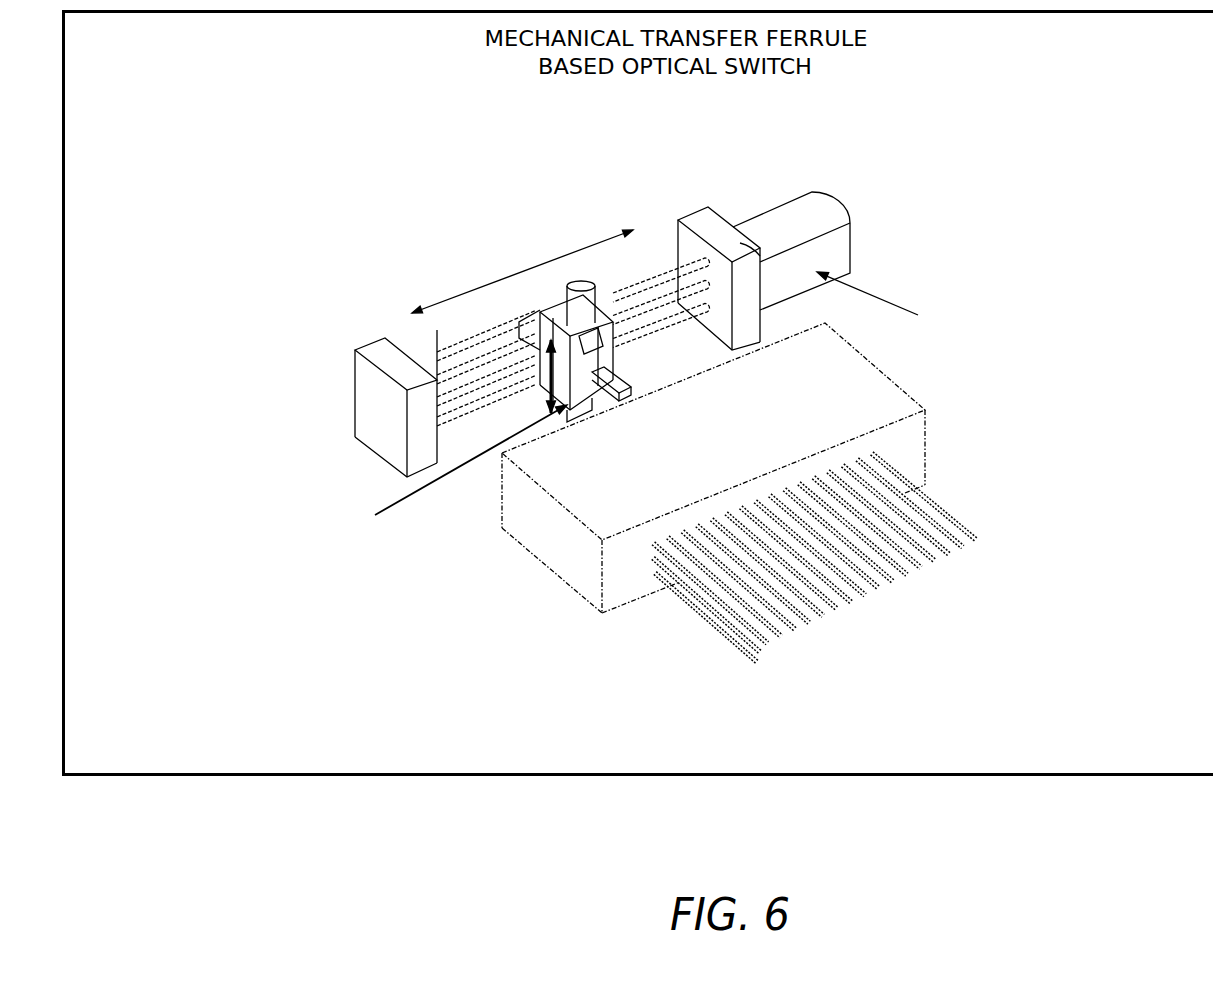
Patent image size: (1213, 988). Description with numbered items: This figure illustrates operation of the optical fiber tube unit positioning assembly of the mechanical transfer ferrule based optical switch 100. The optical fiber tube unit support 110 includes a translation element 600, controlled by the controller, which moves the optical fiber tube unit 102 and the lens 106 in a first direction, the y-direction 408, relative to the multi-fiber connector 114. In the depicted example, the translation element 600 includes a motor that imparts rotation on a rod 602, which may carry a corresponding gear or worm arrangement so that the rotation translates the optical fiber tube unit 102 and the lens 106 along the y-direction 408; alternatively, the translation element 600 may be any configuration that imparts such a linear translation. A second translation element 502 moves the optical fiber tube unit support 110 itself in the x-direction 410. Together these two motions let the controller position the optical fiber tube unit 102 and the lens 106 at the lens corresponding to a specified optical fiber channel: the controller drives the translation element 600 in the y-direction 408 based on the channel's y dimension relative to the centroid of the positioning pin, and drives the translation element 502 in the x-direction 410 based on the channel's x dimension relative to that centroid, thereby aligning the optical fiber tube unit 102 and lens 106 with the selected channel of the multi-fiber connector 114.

The switch 100 is at (657, 104).
The optical fiber tube unit 102 is at (650, 374).
The lens 106 is at (646, 402).
The optical fiber tube unit support 110 is at (540, 319).
The multi-fiber connector 114 is at (550, 553).
The y-direction 408 is at (535, 364).
The x-direction 410 is at (480, 268).
The translation element 502 is at (853, 211).
The translation element 600 is at (604, 271).
The rod 602 is at (598, 346).